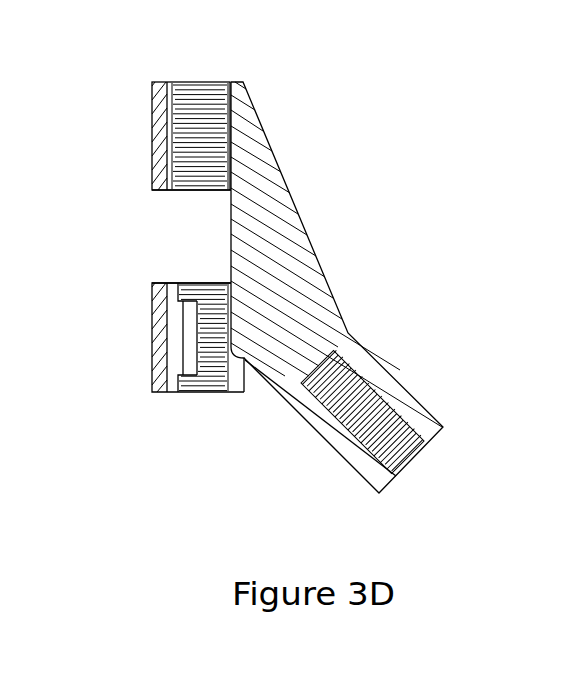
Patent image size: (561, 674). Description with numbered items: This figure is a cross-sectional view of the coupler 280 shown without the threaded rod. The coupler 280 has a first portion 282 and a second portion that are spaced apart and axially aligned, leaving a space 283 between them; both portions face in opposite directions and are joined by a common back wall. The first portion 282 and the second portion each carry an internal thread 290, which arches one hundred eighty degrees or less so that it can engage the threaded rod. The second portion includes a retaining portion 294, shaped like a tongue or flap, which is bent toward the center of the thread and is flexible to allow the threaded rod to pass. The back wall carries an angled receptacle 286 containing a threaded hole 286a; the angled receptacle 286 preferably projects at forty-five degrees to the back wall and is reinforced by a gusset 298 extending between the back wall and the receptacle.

The coupler 280 is at (434, 94).
The first portion 282 is at (158, 128).
The space 283 is at (175, 215).
The angled receptacle 286 is at (378, 376).
The threaded hole 286a is at (400, 410).
The internal thread 290 is at (232, 82).
The retaining portion 294 is at (177, 340).
The gusset 298 is at (283, 237).